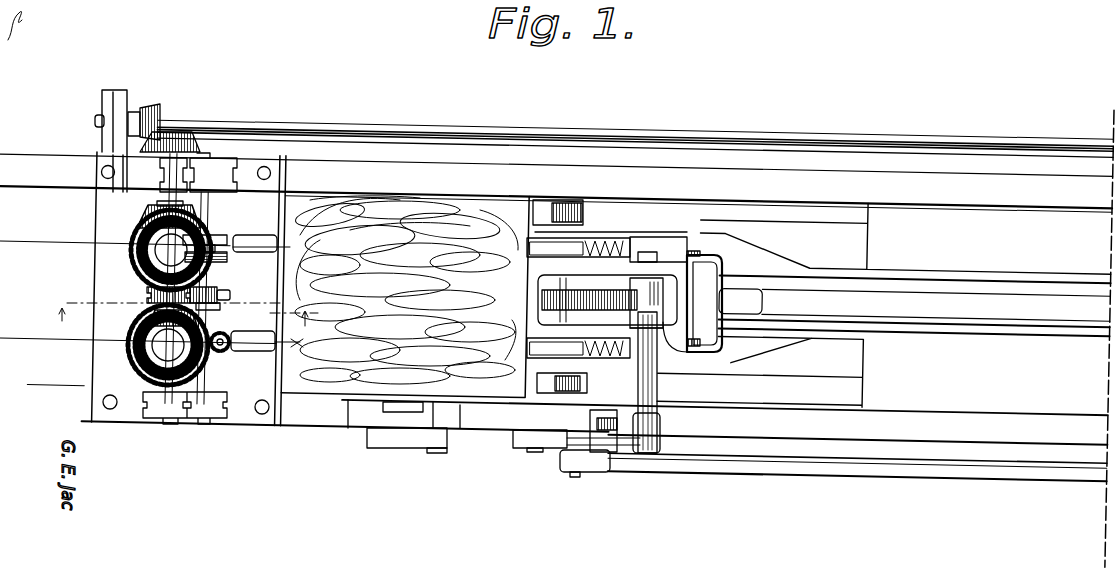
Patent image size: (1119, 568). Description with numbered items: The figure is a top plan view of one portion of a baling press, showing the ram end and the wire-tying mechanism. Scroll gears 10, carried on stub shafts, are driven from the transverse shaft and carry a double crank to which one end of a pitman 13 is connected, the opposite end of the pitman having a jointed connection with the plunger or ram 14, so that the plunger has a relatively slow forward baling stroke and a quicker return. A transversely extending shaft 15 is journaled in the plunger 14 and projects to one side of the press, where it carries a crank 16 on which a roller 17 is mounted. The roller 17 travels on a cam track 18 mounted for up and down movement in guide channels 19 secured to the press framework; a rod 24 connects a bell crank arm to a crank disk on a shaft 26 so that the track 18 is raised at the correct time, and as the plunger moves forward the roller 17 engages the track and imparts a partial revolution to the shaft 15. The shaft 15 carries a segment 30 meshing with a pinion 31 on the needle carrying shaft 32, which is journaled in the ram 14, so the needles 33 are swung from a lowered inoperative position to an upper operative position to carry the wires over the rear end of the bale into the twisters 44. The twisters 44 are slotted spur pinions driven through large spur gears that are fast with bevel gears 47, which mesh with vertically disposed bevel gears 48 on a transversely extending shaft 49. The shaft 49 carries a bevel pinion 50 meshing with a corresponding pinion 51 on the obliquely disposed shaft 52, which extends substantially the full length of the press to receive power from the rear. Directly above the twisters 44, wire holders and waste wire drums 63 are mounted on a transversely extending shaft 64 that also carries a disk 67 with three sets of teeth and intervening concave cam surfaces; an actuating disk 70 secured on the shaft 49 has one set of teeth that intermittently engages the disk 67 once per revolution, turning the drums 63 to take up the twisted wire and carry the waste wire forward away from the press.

The scroll gears 10 is at (193, 306).
The pitman 13 is at (980, 309).
The plunger or ram 14 is at (848, 215).
The transversely extending shaft 15 is at (656, 394).
The crank 16 is at (615, 433).
The roller 17 is at (600, 425).
The cam track 18 is at (495, 422).
The guide channels 19 is at (418, 410).
The rod 24 is at (941, 459).
The shaft 26 is at (272, 230).
The segment 30 is at (614, 293).
The pinion 31 is at (538, 308).
The needle carrying shaft 32 is at (538, 288).
The needles 33 is at (538, 347).
The twisters 44 is at (210, 350).
The bevel gears 47 is at (130, 340).
The bevel gears 48 is at (142, 226).
The transversely extending shaft 49 is at (164, 378).
The bevel pinion 50 is at (198, 142).
The bevel pinion 51 is at (152, 110).
The obliquely disposed shaft 52 is at (532, 124).
The wire holders and waste wire drums 63 is at (216, 238).
The transversely extending shaft 64 is at (214, 274).
The disk 67 is at (220, 303).
The actuating disk 70 is at (147, 292).